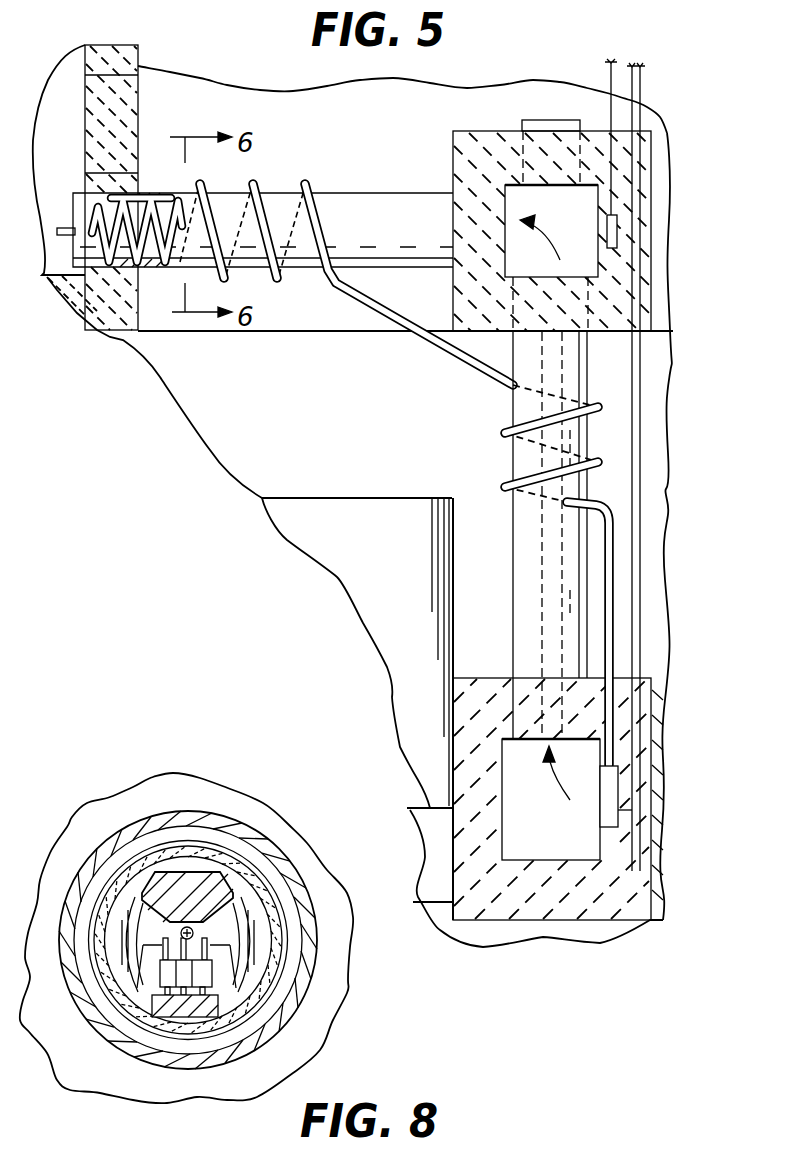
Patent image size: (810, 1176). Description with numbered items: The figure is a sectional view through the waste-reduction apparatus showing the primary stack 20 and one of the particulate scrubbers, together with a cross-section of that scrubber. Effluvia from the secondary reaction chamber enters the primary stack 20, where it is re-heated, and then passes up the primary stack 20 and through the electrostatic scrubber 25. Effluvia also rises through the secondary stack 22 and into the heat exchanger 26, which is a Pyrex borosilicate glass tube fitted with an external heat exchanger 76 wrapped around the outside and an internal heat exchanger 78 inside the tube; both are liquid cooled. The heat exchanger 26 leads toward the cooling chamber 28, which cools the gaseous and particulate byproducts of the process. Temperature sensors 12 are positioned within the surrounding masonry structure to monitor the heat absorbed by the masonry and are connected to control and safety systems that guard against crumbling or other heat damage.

The temperature sensor 12 is at (615, 237).
The primary stack 20 is at (523, 852).
The secondary stack 22 is at (503, 203).
The electrostatic scrubber 25 is at (517, 562).
The heat exchanger 26 is at (357, 193).
The cooling chamber 28 is at (62, 210).
The external heat exchanger 76 is at (253, 187).
The internal heat exchanger 78 is at (147, 268).